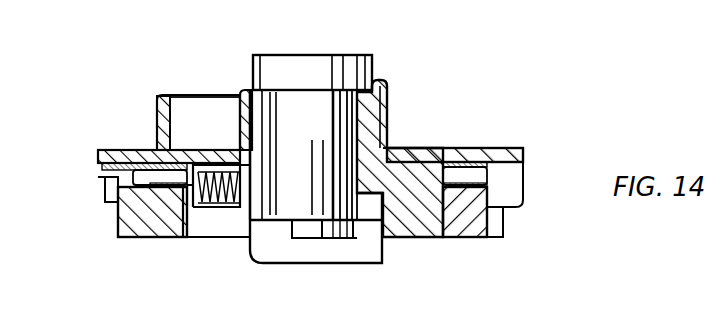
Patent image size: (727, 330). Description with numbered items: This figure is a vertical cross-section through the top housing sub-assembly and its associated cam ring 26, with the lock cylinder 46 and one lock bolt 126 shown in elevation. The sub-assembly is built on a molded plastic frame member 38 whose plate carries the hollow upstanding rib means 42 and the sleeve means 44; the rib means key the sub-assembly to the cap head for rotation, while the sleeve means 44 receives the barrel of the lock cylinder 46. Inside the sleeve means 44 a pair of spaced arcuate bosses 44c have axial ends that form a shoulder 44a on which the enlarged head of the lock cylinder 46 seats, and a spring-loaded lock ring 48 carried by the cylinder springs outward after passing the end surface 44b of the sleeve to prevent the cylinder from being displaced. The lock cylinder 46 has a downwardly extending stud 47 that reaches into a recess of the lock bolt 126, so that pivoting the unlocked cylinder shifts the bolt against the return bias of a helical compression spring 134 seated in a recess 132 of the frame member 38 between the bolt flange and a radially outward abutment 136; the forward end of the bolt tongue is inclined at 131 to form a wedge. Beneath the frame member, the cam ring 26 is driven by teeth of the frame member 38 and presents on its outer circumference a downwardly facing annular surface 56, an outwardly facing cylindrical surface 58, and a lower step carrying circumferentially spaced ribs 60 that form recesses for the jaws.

The rib means 42 is at (157, 113).
The shoulder means 44a is at (242, 92).
The helical compression spring 134 is at (205, 165).
The arcuate bosses 44c is at (357, 105).
The recess 132 is at (250, 181).
The sleeve means 44 is at (381, 86).
The lock cylinder 46 is at (381, 112).
The end of sleeve means 44b is at (382, 149).
The frame member 38 is at (477, 146).
The abutment 136 is at (187, 183).
The annular surface 56 is at (120, 203).
The cylindrical surface 58 is at (118, 218).
The inclined surface 131 is at (183, 228).
The lock ring 48 is at (250, 246).
The lock bolt 126 is at (275, 257).
The stud 47 is at (342, 240).
The cam ring 26 is at (462, 241).
The ribs 60 is at (496, 233).